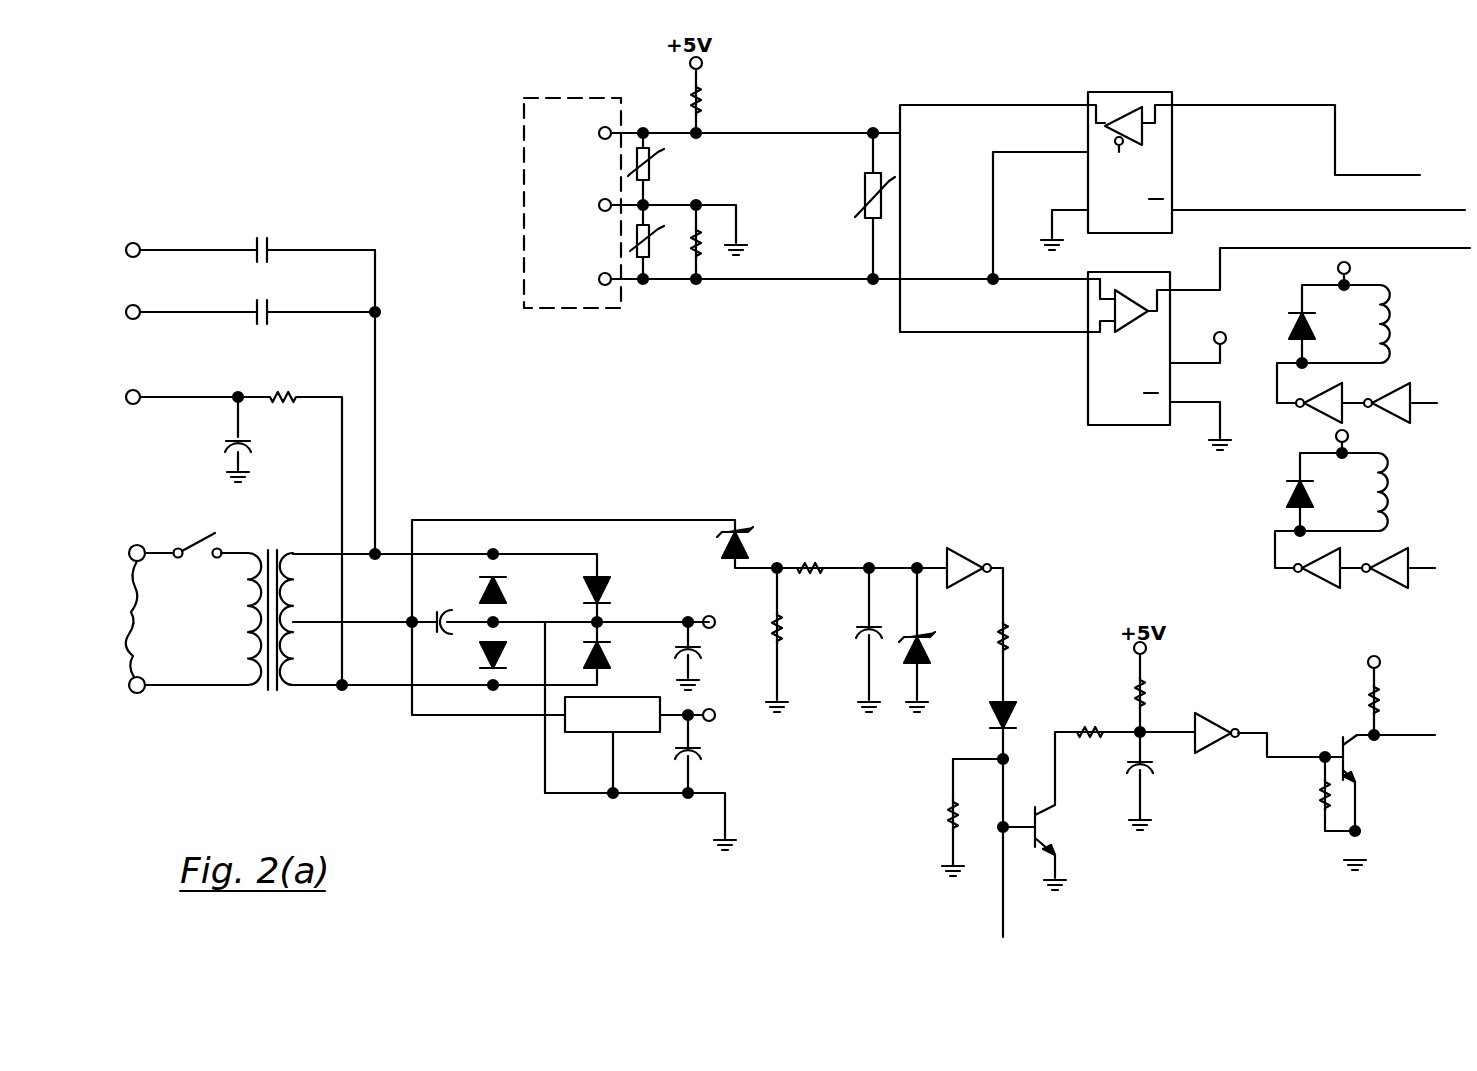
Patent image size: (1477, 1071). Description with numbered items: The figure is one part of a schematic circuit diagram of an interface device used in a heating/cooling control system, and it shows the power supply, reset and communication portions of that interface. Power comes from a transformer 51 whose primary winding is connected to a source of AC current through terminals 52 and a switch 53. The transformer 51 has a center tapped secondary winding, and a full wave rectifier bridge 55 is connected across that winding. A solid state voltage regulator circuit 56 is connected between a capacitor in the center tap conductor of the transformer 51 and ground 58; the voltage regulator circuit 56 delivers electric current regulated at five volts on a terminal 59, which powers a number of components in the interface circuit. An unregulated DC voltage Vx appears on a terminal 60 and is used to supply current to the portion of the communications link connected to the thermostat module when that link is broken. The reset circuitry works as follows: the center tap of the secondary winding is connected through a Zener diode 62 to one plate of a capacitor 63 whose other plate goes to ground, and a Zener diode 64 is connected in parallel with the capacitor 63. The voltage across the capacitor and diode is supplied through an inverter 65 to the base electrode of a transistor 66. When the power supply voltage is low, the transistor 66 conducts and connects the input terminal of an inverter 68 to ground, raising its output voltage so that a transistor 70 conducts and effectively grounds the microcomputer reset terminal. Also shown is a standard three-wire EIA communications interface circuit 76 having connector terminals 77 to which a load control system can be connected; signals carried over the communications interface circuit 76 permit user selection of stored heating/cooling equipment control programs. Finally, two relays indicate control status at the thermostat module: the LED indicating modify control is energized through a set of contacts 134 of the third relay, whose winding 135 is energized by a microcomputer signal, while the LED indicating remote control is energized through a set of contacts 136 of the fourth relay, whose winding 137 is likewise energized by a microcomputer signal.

The transformer 51 is at (270, 700).
The terminals 52 is at (138, 612).
The switch 53 is at (195, 547).
The full wave rectifier bridge 55 is at (562, 537).
The voltage regulator circuit 56 is at (615, 697).
The ground 58 is at (732, 846).
The terminal 59 is at (714, 722).
The terminal 60 is at (712, 634).
The Zener diode 62 is at (752, 546).
The capacitor 63 is at (864, 625).
The Zener diode 64 is at (932, 632).
The inverter 65 is at (975, 562).
The transistor 66 is at (1028, 836).
The inverter 68 is at (1222, 726).
The transistor 70 is at (1350, 750).
The communications interface circuit 76 is at (728, 312).
The connector terminals 77 is at (524, 178).
The contacts 134 is at (268, 256).
The winding 135 is at (1392, 297).
The contacts 136 is at (268, 318).
The winding 137 is at (1390, 465).